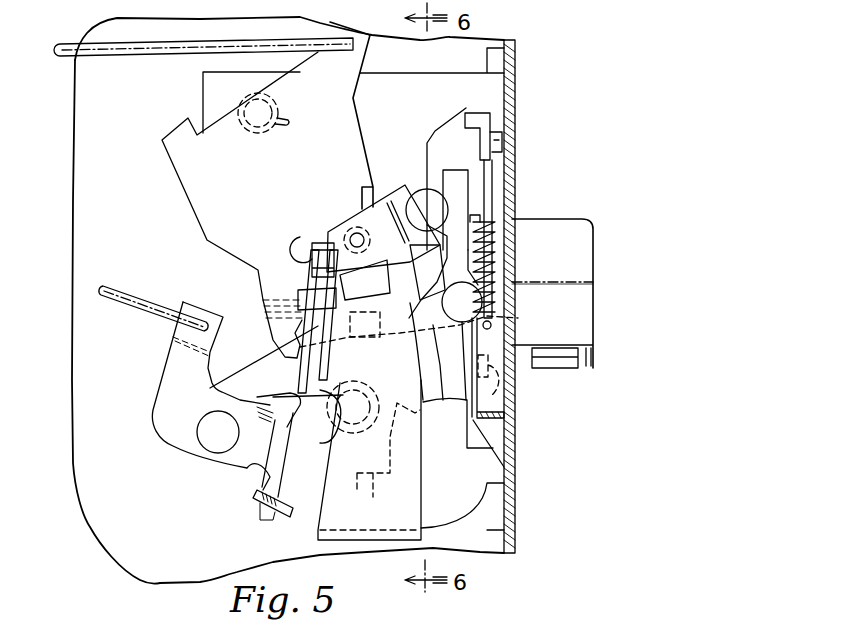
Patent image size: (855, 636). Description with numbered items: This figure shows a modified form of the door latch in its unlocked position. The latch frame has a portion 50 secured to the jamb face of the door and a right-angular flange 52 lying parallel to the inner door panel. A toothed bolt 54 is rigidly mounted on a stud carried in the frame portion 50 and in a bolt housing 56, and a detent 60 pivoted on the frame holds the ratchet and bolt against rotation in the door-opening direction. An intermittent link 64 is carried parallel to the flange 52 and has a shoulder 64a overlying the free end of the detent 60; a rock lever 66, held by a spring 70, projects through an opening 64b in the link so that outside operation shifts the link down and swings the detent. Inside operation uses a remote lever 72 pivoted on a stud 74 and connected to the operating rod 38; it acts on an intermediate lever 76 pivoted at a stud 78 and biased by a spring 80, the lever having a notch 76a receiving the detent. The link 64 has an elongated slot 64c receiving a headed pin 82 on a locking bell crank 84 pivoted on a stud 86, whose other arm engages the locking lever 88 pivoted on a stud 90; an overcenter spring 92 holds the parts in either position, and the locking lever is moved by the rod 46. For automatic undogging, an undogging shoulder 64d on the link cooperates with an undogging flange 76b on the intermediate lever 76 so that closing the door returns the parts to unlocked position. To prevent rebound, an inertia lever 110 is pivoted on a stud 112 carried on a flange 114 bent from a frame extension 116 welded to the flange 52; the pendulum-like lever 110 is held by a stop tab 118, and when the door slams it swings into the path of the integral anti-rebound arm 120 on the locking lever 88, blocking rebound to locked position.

The operating rod 38 is at (143, 300).
The rod 46 is at (67, 57).
The frame portion 50 is at (507, 181).
The frame flange 52 is at (386, 86).
The bolt 54 is at (564, 369).
The bolt housing 56 is at (593, 246).
The detent 60 is at (503, 372).
The intermittent link 64 is at (434, 140).
The shoulder 64a is at (500, 338).
The opening 64b is at (469, 124).
The elongated slot 64c is at (440, 268).
The undogging shoulder 64d is at (365, 280).
The rock lever 66 is at (499, 154).
The spring 70 is at (494, 246).
The remote lever 72 is at (158, 380).
The stud 74 is at (212, 449).
The intermediate lever 76 is at (447, 406).
The notch 76a is at (500, 407).
The undogging flange 76b is at (370, 352).
The pivot stud 78 is at (274, 394).
The spring 80 is at (294, 509).
The headed pin 82 is at (444, 305).
The locking bell crank 84 is at (359, 208).
The stud 86 is at (417, 193).
The locking lever 88 is at (194, 203).
The stud 90 is at (304, 240).
The overcenter spring 92 is at (252, 94).
The inertia lever 110 is at (300, 376).
The stud 112 is at (312, 256).
The flange 114 is at (328, 371).
The frame extension 116 is at (420, 475).
The stop tab 118 is at (300, 300).
The anti-rebound arm 120 is at (274, 341).